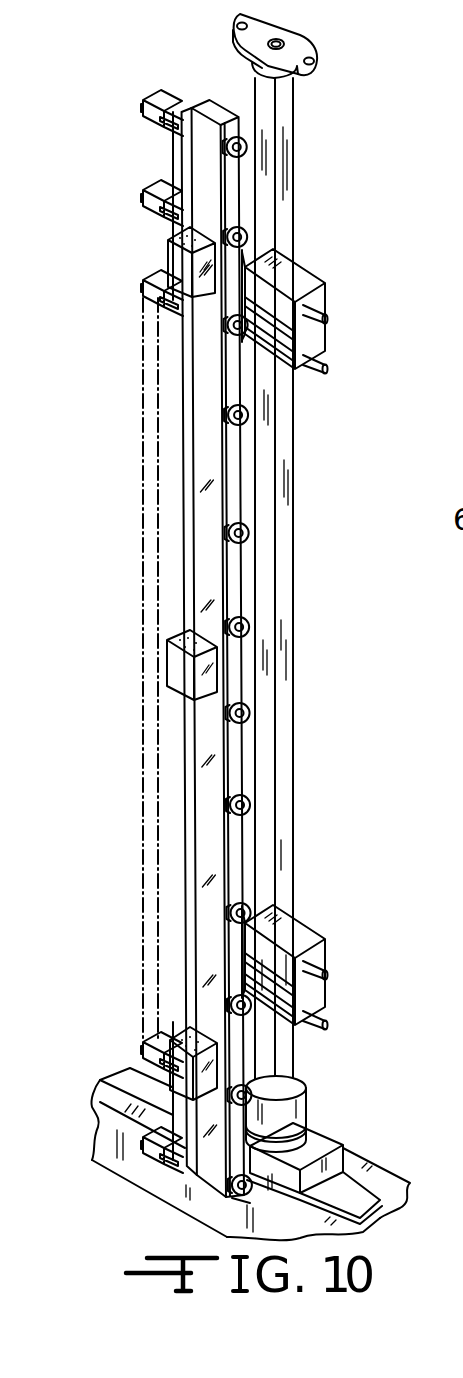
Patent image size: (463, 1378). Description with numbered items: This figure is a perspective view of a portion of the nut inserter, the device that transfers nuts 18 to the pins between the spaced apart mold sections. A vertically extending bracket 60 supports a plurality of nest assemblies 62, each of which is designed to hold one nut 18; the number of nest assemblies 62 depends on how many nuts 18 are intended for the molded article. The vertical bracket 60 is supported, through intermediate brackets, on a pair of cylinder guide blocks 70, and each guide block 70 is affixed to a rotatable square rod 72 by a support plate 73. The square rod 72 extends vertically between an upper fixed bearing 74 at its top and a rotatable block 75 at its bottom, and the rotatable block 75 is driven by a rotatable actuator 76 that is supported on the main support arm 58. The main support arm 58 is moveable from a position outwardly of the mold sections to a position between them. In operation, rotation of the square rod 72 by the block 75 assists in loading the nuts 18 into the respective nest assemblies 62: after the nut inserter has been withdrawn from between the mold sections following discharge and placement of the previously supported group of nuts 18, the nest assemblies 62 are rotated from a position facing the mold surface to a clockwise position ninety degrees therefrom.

The nut 18 is at (462, 678).
The main support arm 58 is at (387, 1187).
The vertically extending bracket 60 is at (204, 765).
The nest assembly 62 is at (178, 80).
The cylinder guide block 70 is at (297, 280).
The rotatable square rod 72 is at (292, 441).
The support plate 73 is at (326, 334).
The upper fixed bearing 74 is at (318, 44).
The rotatable block 75 is at (306, 1107).
The rotatable actuator 76 is at (322, 1141).